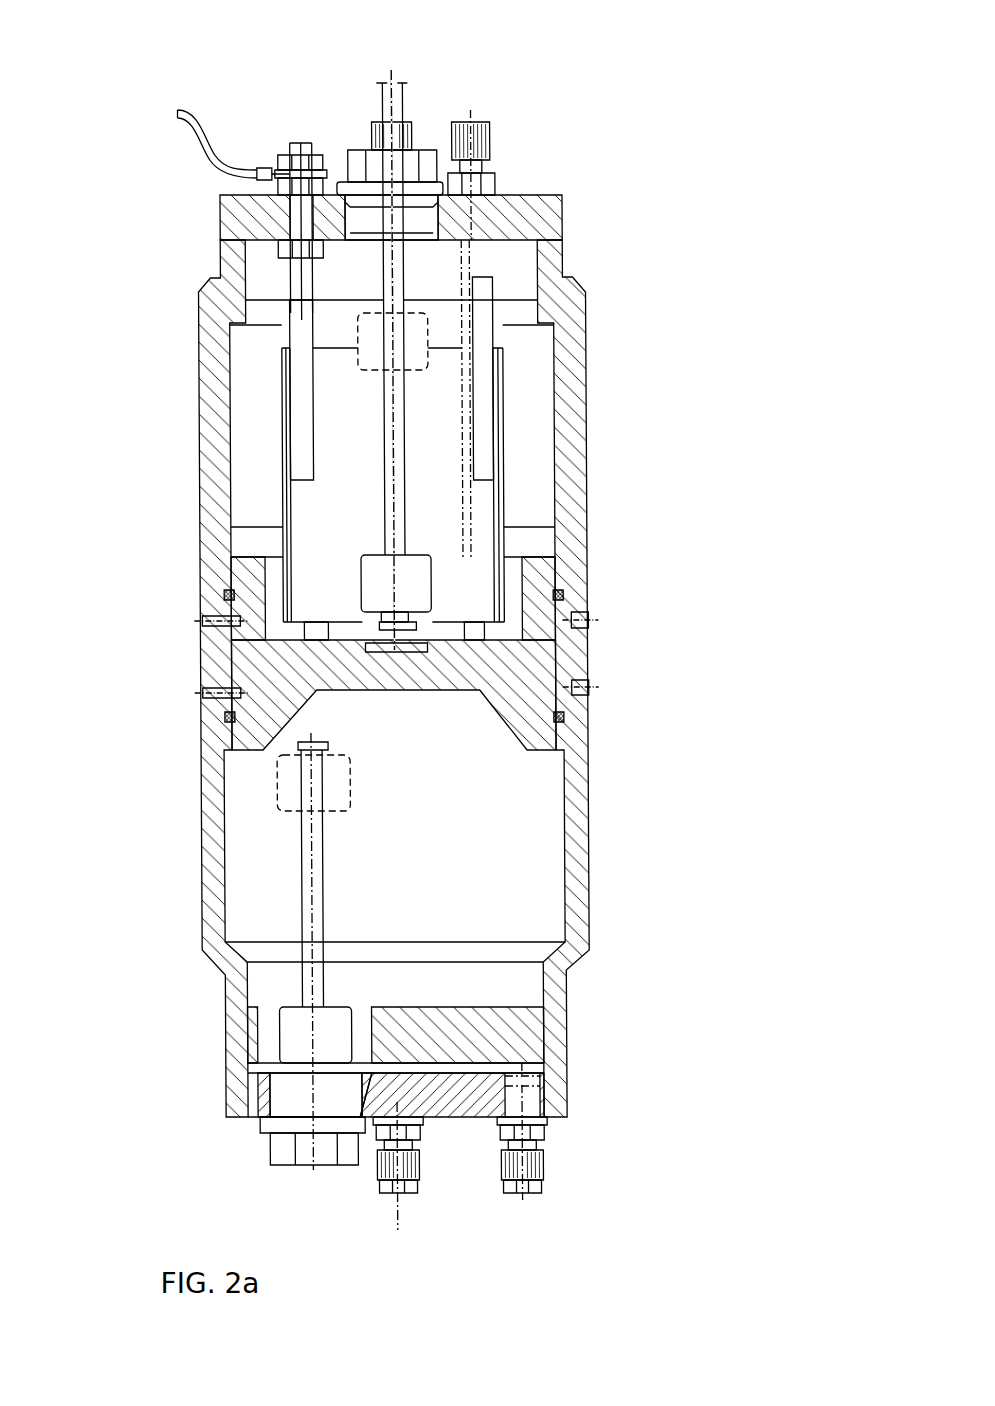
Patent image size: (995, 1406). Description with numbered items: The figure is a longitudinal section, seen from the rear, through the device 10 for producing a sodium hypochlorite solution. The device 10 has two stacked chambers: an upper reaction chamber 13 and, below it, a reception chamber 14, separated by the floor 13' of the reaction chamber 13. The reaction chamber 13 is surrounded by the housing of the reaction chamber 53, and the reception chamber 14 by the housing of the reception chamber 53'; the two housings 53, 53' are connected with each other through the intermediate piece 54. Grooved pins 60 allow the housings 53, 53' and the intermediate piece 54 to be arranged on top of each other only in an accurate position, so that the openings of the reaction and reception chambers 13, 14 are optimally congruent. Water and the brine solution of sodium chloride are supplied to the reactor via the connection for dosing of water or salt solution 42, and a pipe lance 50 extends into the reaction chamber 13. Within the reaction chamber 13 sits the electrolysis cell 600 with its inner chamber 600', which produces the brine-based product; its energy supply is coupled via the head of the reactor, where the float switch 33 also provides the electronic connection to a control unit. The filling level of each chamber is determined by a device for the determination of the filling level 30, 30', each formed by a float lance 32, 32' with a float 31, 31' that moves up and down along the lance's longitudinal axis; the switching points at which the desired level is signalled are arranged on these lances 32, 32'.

The device 10 is at (600, 309).
The reaction chamber 13 is at (488, 441).
The floor of the reaction chamber 13' is at (492, 594).
The reception chamber 14 is at (527, 830).
The device for the determination of the filling level 30 is at (235, 315).
The device for the determination of the filling level 30' is at (197, 785).
The float 31 is at (238, 593).
The float 31' is at (210, 1086).
The float lance 32 is at (226, 360).
The float lance 32' is at (186, 951).
The float switch 33 is at (357, 167).
The connection for dosing of water or salt solution 42 is at (473, 118).
The pipe lance 50 is at (305, 425).
The housing of the reaction chamber 53 is at (478, 247).
The housing of the reception chamber 53' is at (506, 1062).
The intermediate piece 54 is at (537, 663).
The grooved pin 60 is at (215, 692).
The electrolysis cell 600 is at (592, 440).
The inner chamber of the electrolysis cell 600' is at (199, 494).